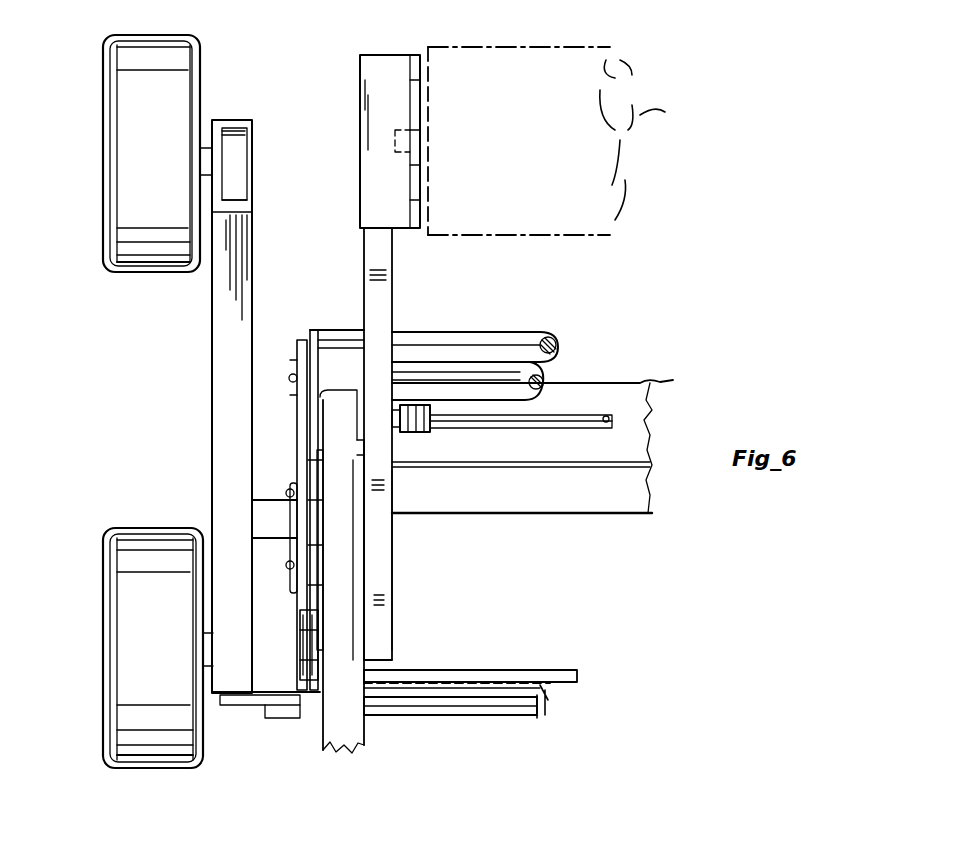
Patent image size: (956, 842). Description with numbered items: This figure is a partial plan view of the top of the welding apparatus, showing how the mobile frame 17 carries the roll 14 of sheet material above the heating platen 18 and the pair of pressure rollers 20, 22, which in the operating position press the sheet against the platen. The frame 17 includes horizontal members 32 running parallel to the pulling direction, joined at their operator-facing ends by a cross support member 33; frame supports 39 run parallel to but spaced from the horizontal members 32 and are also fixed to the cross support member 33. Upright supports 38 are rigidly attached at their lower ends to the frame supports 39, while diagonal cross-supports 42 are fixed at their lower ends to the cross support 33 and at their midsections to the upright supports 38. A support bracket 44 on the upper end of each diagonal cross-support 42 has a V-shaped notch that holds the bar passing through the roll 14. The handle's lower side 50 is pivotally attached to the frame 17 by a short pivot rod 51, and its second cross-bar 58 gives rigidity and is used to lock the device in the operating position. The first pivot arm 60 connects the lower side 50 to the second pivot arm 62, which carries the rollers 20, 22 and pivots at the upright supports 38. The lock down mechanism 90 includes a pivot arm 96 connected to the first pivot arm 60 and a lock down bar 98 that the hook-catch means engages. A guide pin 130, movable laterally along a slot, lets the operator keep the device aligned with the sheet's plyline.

The roll 14 is at (620, 140).
The mobile frame 17 is at (212, 373).
The heating platen 18 is at (648, 387).
The pressure roller 20 is at (540, 375).
The pressure roller 22 is at (520, 332).
The horizontal member 32 is at (212, 309).
The cross support member 33 is at (445, 668).
The upright support 38 is at (385, 402).
The frame support 39 is at (385, 546).
The diagonal cross-support 42 is at (366, 253).
The support bracket 44 is at (420, 118).
The lower side 50 is at (335, 580).
The short pivot rod 51 is at (357, 420).
The second cross-bar 58 is at (478, 695).
The first pivot arm 60 is at (290, 528).
The second pivot arm 62 is at (297, 375).
The lock down mechanism 90 is at (310, 528).
The pivot arm 96 is at (300, 632).
The lock down bar 98 is at (540, 693).
The guide pin 130 is at (290, 712).